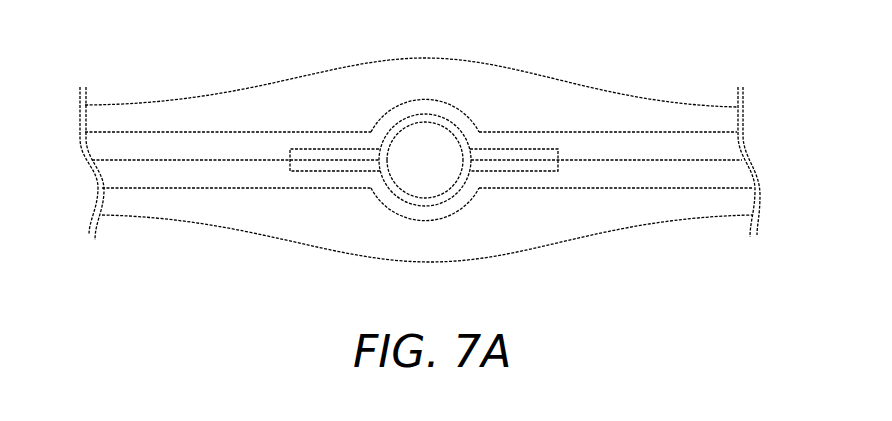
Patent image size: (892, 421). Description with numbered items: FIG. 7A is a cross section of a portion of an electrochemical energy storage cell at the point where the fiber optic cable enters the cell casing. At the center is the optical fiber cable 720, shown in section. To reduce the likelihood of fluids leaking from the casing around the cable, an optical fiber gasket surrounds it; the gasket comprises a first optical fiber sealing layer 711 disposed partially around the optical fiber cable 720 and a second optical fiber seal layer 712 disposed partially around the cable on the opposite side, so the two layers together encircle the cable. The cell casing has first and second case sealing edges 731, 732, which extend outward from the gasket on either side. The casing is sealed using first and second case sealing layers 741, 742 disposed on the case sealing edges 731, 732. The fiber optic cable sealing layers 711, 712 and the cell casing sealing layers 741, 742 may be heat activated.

The first optical fiber sealing layer 711 is at (441, 121).
The second optical fiber seal layer 712 is at (447, 192).
The optical fiber cable 720 is at (413, 145).
The first case sealing edge 731 is at (660, 113).
The second case sealing edge 732 is at (617, 218).
The first case sealing layer 741 is at (575, 143).
The second case sealing layer 742 is at (695, 175).